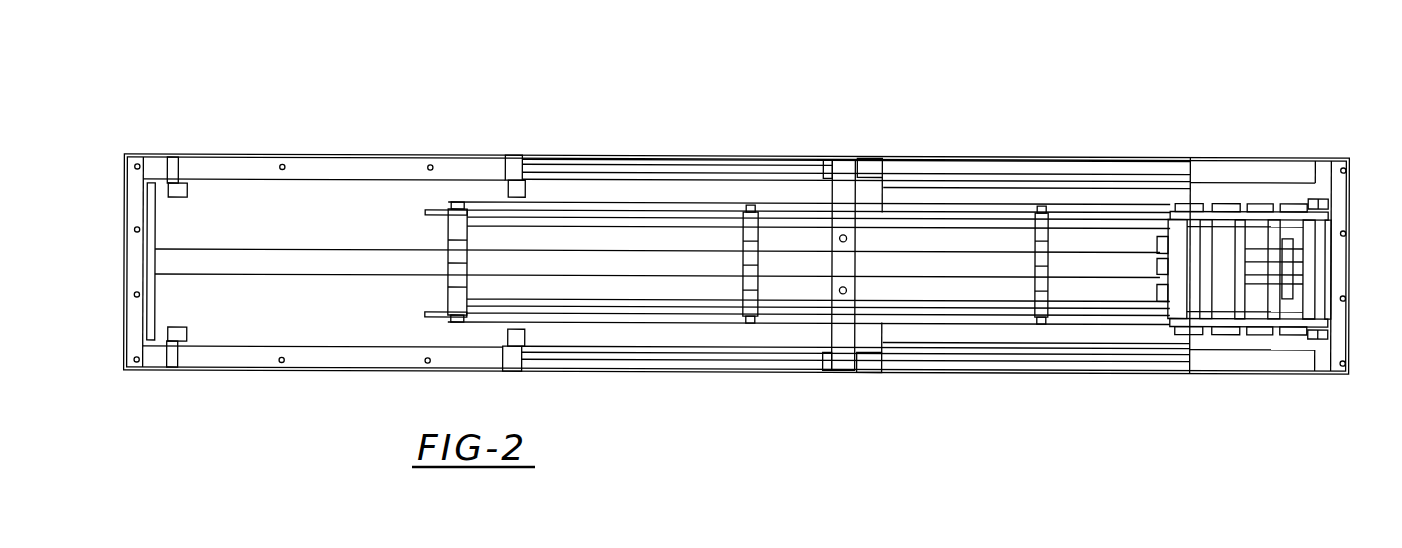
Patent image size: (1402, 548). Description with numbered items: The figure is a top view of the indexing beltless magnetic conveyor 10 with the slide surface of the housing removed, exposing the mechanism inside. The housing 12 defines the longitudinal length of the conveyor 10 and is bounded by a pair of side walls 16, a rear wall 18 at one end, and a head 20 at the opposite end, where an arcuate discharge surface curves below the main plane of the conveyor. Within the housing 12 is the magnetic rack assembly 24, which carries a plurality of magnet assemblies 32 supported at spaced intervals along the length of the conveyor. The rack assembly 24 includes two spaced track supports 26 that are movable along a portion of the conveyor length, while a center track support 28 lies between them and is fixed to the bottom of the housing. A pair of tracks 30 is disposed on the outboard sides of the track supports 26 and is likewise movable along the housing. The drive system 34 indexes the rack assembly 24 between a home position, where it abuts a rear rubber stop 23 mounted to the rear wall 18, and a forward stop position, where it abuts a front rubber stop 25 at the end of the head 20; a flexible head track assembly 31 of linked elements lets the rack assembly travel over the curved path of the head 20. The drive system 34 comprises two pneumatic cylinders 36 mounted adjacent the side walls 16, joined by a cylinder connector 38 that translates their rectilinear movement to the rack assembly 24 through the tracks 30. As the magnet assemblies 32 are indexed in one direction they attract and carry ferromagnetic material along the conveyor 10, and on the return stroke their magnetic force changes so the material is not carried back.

The conveyor 10 is at (1210, 128).
The housing 12 is at (958, 154).
The side walls 16 is at (317, 154).
The rear wall 18 is at (120, 268).
The head 20 is at (1292, 170).
The rear rubber stop 23 is at (154, 289).
The magnetic rack assembly 24 is at (712, 206).
The front rubber stop 25 is at (1328, 296).
The track supports 26 is at (990, 237).
The center track support 28 is at (299, 258).
The tracks 30 is at (676, 214).
The flexible head track assembly 31 is at (1271, 324).
The magnet assemblies 32 is at (474, 242).
The drive system 34 is at (448, 176).
The pneumatic cylinders 36 is at (360, 158).
The cylinder connector 38 is at (856, 196).